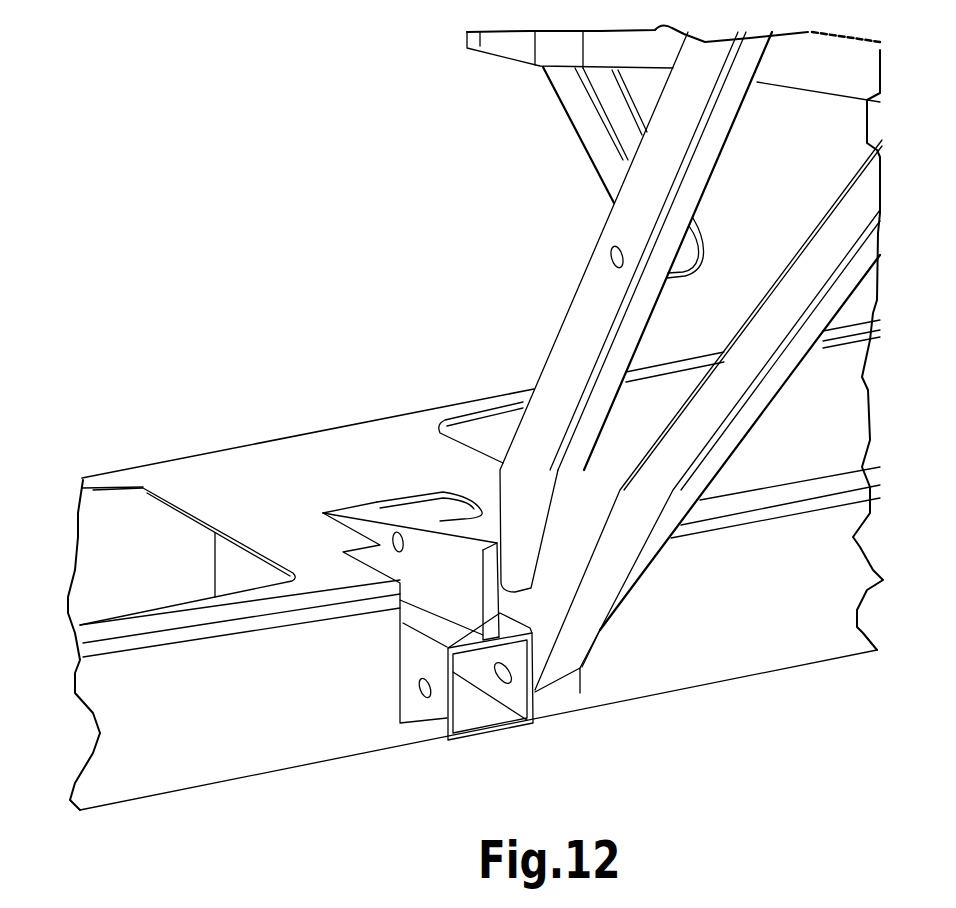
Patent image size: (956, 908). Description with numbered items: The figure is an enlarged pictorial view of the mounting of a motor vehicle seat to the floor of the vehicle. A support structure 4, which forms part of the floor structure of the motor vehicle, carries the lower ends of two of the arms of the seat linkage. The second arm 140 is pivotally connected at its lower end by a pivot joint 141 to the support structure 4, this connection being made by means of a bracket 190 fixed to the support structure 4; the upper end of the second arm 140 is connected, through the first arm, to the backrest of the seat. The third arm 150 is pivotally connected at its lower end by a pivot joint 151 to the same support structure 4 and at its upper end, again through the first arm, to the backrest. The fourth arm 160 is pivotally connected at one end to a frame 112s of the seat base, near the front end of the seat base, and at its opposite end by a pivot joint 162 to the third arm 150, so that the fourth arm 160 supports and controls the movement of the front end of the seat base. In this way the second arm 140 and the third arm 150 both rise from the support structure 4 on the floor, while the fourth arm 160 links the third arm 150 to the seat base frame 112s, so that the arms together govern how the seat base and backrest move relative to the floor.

The frame of the seat base 112s is at (470, 49).
The fourth arm 160 is at (565, 121).
The third arm 150 is at (545, 355).
The pivot joint 162 is at (611, 250).
The support structure 4 is at (196, 447).
The pivot joint 151 is at (392, 535).
The bracket 190 is at (421, 492).
The second arm 140 is at (762, 730).
The pivot joint 141 is at (388, 845).